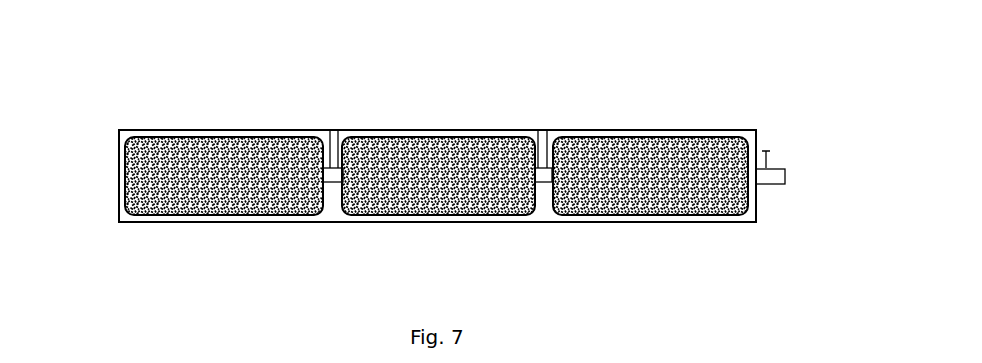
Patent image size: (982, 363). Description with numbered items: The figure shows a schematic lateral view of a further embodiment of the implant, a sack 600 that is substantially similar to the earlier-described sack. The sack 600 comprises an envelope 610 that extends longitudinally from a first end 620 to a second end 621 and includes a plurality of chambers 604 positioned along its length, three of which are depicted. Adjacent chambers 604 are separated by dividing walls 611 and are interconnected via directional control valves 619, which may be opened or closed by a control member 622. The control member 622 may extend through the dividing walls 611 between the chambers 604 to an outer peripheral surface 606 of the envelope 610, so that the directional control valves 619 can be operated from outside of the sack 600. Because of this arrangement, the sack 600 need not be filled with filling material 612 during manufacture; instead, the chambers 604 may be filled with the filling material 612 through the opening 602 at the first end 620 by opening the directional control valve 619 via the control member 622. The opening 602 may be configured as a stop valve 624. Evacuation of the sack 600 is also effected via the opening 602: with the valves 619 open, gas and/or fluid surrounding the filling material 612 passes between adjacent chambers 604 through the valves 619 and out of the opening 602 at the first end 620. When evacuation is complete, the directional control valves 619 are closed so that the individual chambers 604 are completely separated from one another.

The sack 600 is at (599, 127).
The opening 602 is at (767, 187).
The chambers 604 is at (438, 140).
The outer peripheral surface 606 is at (615, 221).
The envelope 610 is at (230, 220).
The dividing walls 611 is at (544, 196).
The filling material 612 is at (222, 167).
The directional control valve 619 is at (331, 180).
The first end 620 is at (753, 136).
The second end 621 is at (117, 152).
The control member 622 is at (335, 137).
The stop valve 624 is at (775, 172).